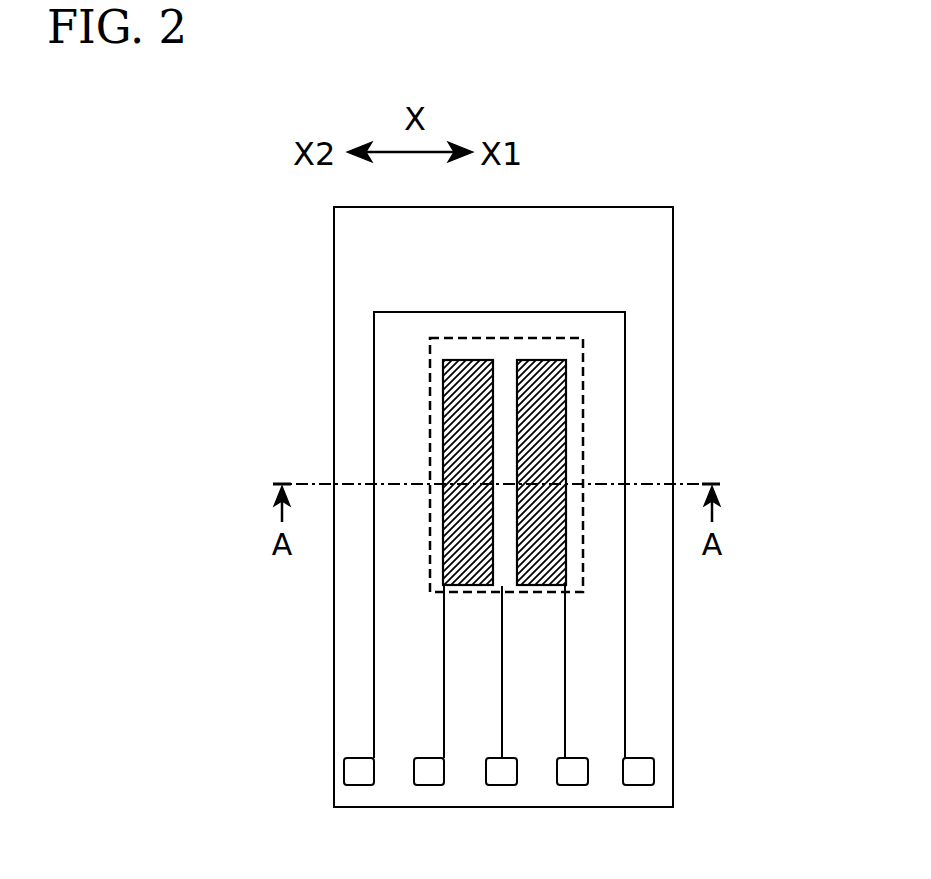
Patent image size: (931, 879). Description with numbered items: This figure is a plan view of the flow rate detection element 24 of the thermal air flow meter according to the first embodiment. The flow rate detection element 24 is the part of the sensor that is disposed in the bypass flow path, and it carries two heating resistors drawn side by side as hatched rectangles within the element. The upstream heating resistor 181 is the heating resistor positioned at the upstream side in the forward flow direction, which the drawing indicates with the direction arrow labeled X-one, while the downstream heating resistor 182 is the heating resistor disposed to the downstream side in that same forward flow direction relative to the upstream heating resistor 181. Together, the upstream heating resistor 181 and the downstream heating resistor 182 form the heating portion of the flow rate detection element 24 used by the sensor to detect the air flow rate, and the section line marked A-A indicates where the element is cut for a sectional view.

The flow rate detection element 24 is at (673, 637).
The upstream heating resistor 181 is at (460, 440).
The downstream heating resistor 182 is at (555, 435).